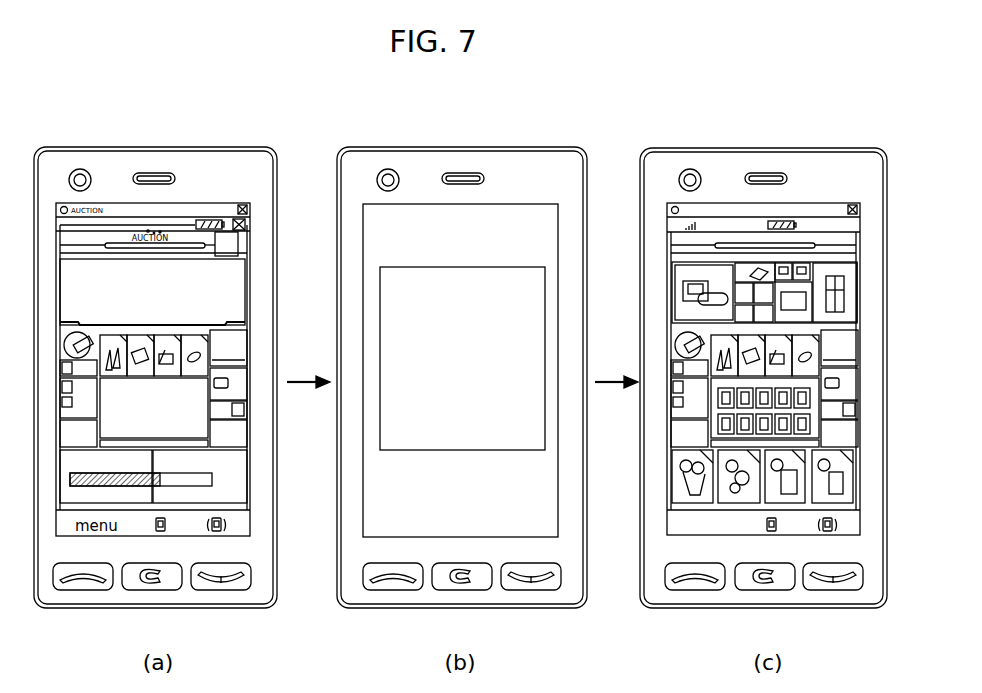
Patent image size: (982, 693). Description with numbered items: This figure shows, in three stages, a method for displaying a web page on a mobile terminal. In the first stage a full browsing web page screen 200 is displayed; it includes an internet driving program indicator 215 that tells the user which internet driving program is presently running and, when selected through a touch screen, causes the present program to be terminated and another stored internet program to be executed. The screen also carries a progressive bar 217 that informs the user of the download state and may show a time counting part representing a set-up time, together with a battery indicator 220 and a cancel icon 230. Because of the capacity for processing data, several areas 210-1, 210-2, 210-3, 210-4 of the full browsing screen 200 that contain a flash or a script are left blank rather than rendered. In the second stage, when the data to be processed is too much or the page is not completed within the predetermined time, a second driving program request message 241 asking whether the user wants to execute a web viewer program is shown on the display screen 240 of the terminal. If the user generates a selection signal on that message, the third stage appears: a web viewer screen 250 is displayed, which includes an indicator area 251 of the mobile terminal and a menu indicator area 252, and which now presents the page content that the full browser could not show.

The full browsing web page screen 200 is at (117, 202).
The battery indicator 220 is at (213, 218).
The cancel icon 230 is at (246, 221).
The internet driving program indicator 215 is at (238, 243).
The area including a flash or a script 210-1 is at (235, 291).
The area including a flash or a script 210-2 is at (178, 404).
The area including a flash or a script 210-3 is at (122, 497).
The area including a flash or a script 210-4 is at (230, 475).
The progressive bar 217 is at (198, 482).
The display screen 240 is at (543, 203).
The second driving program request message 241 is at (545, 427).
The web viewer screen 250 is at (680, 243).
The indicator area 251 is at (802, 217).
The menu indicator area 252 is at (672, 520).